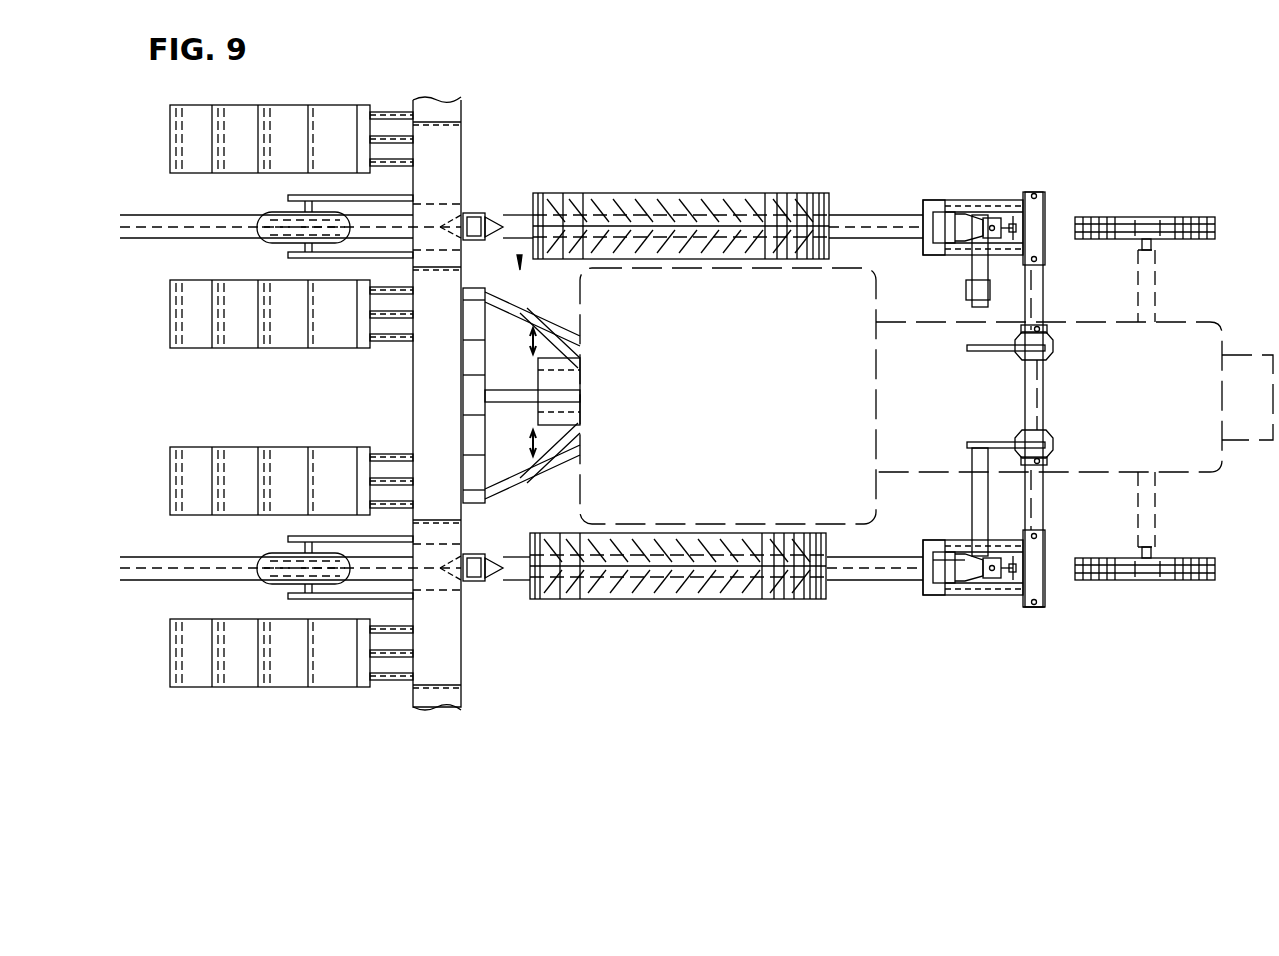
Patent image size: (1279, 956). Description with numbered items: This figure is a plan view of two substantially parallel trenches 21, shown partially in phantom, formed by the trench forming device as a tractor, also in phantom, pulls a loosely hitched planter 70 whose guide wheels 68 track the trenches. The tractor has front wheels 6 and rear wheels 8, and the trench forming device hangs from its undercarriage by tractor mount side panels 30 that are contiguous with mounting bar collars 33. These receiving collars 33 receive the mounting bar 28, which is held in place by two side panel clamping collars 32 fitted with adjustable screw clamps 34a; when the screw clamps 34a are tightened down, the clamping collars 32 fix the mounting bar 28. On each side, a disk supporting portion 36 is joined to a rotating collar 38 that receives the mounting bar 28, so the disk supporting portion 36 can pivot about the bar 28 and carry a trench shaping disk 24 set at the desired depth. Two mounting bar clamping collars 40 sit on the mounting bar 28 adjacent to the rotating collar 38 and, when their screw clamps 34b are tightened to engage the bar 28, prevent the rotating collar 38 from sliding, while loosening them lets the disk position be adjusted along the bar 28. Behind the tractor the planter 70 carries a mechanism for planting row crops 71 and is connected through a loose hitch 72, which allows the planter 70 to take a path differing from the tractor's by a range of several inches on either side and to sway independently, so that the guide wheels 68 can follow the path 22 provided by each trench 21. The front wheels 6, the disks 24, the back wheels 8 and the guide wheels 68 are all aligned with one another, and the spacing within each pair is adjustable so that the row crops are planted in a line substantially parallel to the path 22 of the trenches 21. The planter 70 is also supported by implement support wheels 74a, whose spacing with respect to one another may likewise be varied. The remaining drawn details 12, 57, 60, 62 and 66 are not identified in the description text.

The front wheels 6 is at (1150, 217).
The rear wheels 8 is at (712, 212).
The tractor 12 is at (789, 676).
The trench 21 is at (880, 215).
The path 22 is at (893, 238).
The trench shaping disk 24 is at (955, 572).
The mounting bar 28 is at (1040, 291).
The tractor mount side panels 30 is at (970, 351).
The side panel clamping collars 32 is at (1040, 329).
The mounting bar collars 33 is at (1050, 360).
The adjustable screw clamps 34a is at (1048, 344).
The screw clamps 34b is at (1040, 607).
The disk supporting portion 36 is at (985, 200).
The rotating collar 38 is at (1036, 215).
The mounting bar clamping collars 40 is at (1036, 193).
The bracket 57 is at (930, 200).
The arm 60 is at (986, 520).
The link arm 62 is at (971, 268).
The pointer 66 is at (496, 226).
The guide wheels 68 is at (487, 213).
The planter 70 is at (383, 104).
The mechanism for planting row crops 71 is at (404, 301).
The loose hitch 72 is at (519, 252).
The implement support wheels 74a is at (262, 215).